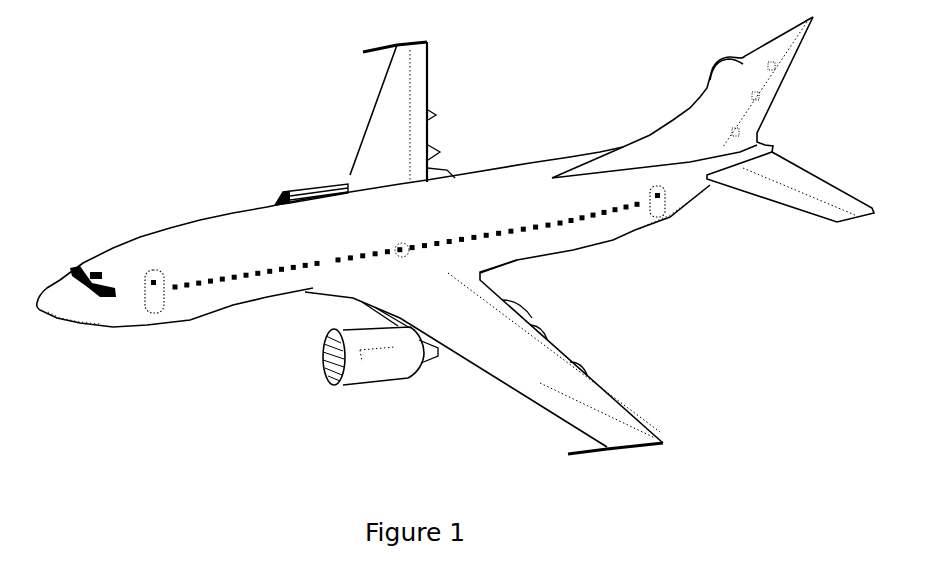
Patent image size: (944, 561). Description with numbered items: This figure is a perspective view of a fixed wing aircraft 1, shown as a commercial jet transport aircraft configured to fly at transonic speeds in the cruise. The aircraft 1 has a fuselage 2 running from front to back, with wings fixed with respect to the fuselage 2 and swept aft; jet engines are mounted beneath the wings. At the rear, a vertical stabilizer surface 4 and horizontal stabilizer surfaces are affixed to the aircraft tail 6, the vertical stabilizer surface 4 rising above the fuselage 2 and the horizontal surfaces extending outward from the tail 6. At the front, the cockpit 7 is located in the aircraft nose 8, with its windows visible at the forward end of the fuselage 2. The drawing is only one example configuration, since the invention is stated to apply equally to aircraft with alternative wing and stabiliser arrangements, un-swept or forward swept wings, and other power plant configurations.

The fixed wing aircraft 1 is at (132, 172).
The fuselage 2 is at (180, 302).
The vertical stabilizer surface 4 is at (695, 135).
The aircraft tail 6 is at (682, 190).
The cockpit 7 is at (75, 268).
The aircraft nose 8 is at (90, 310).